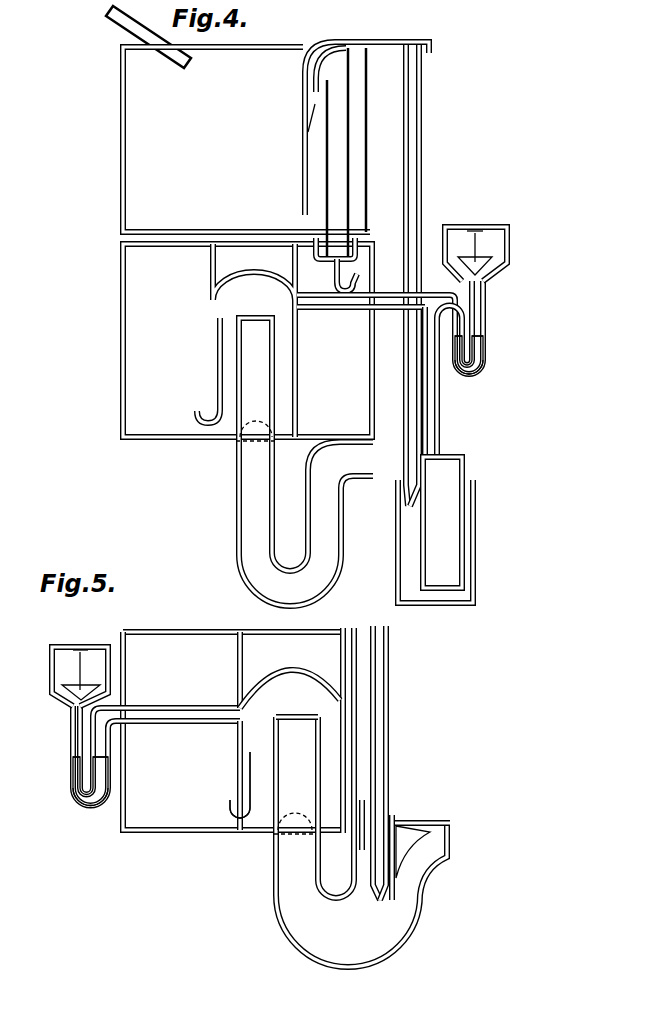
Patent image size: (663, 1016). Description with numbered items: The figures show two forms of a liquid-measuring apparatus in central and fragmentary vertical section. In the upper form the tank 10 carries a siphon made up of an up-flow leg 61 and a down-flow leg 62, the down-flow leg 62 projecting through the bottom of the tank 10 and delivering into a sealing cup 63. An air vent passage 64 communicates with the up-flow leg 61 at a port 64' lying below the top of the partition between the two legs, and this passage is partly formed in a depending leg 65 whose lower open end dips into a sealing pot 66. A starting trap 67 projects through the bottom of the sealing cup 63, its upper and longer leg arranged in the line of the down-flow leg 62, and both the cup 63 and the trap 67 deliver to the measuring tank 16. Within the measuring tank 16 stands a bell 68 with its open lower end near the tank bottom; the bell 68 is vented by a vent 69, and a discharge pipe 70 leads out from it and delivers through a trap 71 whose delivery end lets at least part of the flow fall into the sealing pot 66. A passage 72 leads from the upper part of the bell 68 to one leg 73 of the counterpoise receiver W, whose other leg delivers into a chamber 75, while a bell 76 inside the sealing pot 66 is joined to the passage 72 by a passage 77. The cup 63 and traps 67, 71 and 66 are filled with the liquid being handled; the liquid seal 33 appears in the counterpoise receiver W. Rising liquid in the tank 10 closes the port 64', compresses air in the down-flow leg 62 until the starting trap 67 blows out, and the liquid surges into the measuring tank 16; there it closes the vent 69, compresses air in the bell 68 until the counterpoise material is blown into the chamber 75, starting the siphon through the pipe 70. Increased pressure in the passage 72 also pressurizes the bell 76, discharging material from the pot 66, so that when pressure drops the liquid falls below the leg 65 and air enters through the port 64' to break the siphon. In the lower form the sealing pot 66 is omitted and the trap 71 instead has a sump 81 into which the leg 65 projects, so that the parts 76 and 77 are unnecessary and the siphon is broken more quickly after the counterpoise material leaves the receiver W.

In FIG. 4, the tank 10 is at (121, 197).
In FIG. 4, the measuring tank 16 is at (121, 402).
In FIG. 4, the liquid seal 33 is at (486, 355).
In FIG. 5, the liquid seal 33 is at (72, 771).
In FIG. 4, the up-flow leg 61 is at (313, 184).
In FIG. 4, the down-flow leg 62 is at (352, 167).
In FIG. 4, the sealing cup 63 is at (326, 262).
In FIG. 4, the air vent passage 64 is at (334, 48).
In FIG. 4, the port 64' is at (288, 116).
In FIG. 4, the depending leg 65 is at (424, 131).
In FIG. 5, the depending leg 65 is at (390, 736).
In FIG. 4, the sealing pot 66 is at (474, 581).
In FIG. 4, the starting trap 67 is at (358, 278).
In FIG. 4, the bell 68 is at (298, 400).
In FIG. 5, the bell 68 is at (238, 685).
In FIG. 4, the vent 69 is at (226, 326).
In FIG. 5, the vent 69 is at (254, 757).
In FIG. 4, the discharge pipe 70 is at (237, 470).
In FIG. 4, the trap 71 is at (328, 553).
In FIG. 5, the trap 71 is at (360, 797).
In FIG. 4, the passage 72 is at (397, 312).
In FIG. 4, the leg 73 is at (468, 331).
In FIG. 4, the chamber 75 is at (505, 232).
In FIG. 4, the bell 76 is at (464, 472).
In FIG. 4, the passage 77 is at (440, 431).
In FIG. 5, the sump 81 is at (397, 815).
In FIG. 4, the counterpoise receiver W is at (472, 377).
In FIG. 5, the counterpoise receiver W is at (82, 801).